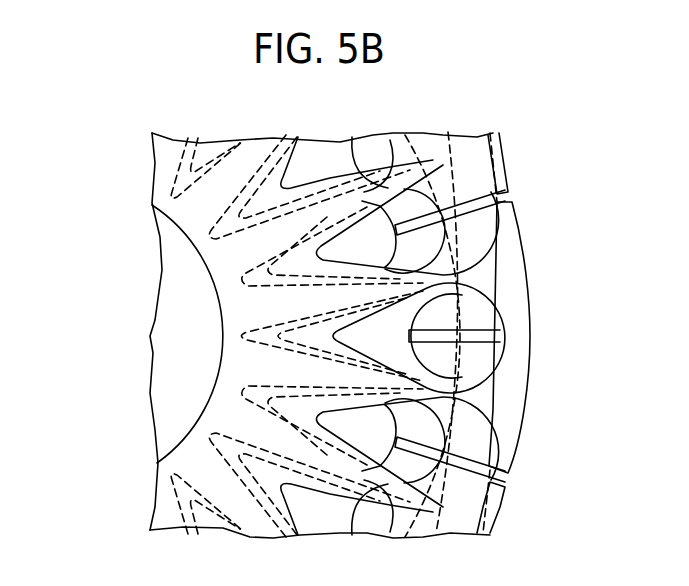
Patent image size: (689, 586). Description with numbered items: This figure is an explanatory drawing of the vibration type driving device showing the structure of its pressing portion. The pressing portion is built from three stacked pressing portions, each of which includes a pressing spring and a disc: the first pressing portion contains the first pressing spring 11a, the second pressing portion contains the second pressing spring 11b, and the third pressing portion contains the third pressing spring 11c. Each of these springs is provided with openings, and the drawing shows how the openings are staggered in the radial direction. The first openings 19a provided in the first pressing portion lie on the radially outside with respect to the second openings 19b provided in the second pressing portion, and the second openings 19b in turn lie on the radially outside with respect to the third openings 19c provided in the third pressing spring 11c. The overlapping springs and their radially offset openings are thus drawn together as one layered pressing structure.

The first openings 19a is at (440, 162).
The second openings 19b is at (326, 220).
The third openings 19c is at (240, 278).
The first pressing spring 11a is at (503, 263).
The second pressing spring 11b is at (477, 362).
The third pressing spring 11c is at (440, 500).